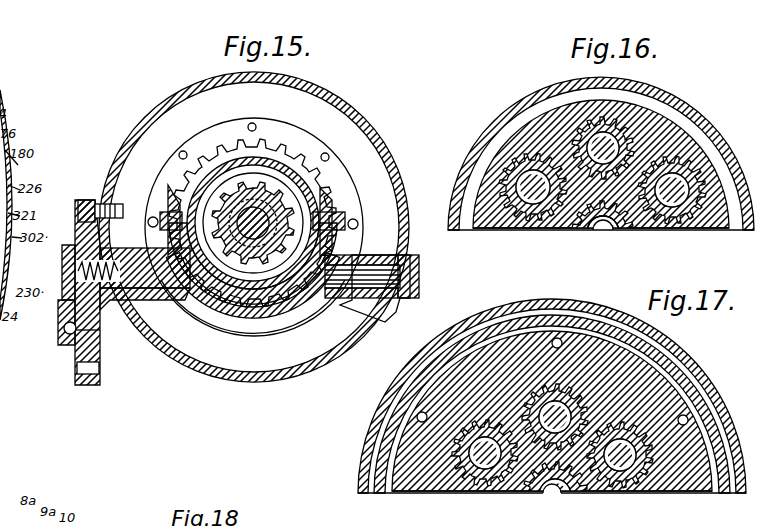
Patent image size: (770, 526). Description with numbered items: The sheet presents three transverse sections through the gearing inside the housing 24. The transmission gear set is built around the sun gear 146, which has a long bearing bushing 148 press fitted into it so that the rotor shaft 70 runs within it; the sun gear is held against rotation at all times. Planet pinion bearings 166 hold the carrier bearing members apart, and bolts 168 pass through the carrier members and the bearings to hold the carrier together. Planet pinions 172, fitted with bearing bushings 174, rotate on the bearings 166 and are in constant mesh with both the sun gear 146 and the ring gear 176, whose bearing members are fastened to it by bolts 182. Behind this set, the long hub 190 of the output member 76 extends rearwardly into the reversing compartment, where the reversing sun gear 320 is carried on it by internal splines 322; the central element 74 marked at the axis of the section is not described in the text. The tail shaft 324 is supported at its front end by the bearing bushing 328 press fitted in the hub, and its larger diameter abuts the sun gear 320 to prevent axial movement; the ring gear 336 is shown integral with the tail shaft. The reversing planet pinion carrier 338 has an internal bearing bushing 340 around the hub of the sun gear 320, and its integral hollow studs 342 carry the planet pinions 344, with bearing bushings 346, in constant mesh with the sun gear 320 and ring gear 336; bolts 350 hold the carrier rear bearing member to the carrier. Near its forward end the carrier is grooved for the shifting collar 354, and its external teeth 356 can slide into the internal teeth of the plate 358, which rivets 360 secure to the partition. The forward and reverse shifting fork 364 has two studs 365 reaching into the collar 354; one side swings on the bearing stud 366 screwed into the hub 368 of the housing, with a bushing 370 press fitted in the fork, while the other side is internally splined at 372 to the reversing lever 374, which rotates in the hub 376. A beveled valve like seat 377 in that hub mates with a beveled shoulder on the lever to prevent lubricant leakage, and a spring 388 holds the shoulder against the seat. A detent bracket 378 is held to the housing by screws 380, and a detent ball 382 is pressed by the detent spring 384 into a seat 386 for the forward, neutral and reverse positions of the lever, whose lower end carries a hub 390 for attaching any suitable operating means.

In FIG. 15, the housing 24 is at (380, 145).
In FIG. 16, the housing 24 is at (722, 150).
In FIG. 17, the housing 24 is at (362, 490).
In FIG. 15, the rotor shaft 70 is at (215, 178).
In FIG. 17, the rotor shaft 70 is at (552, 426).
In FIG. 15, the shaft 74 is at (385, 263).
In FIG. 17, the output member 76 is at (724, 488).
In FIG. 17, the sun gear 146 is at (556, 496).
In FIG. 17, the bearing bushing 148 is at (525, 480).
In FIG. 17, the planet pinion bearings 166 is at (578, 417).
In FIG. 17, the bolts 168 is at (532, 417).
In FIG. 17, the planet pinions 172 is at (596, 470).
In FIG. 17, the bearing bushings 174 is at (635, 475).
In FIG. 17, the ring gear 176 is at (440, 480).
In FIG. 17, the bolts 182 is at (418, 430).
In FIG. 15, the long hub 190 is at (235, 185).
In FIG. 16, the long hub 190 is at (575, 232).
In FIG. 15, the reversing sun gear 320 is at (272, 175).
In FIG. 16, the reversing sun gear 320 is at (556, 232).
In FIG. 15, the internal splines 322 is at (255, 180).
In FIG. 16, the internal splines 322 is at (640, 225).
In FIG. 16, the tail shaft 324 is at (614, 232).
In FIG. 16, the bearing bushing 328 is at (590, 232).
In FIG. 16, the ring gear 336 is at (690, 140).
In FIG. 15, the reversing planet pinion carrier 338 is at (312, 158).
In FIG. 15, the bearing bushing 340 is at (305, 185).
In FIG. 16, the hollow studs 342 is at (680, 215).
In FIG. 16, the planet pinions 344 is at (580, 148).
In FIG. 16, the bearing bushings 346 is at (630, 148).
In FIG. 16, the bolts 350 is at (515, 210).
In FIG. 15, the shifting collar 354 is at (182, 200).
In FIG. 15, the external teeth 356 is at (237, 128).
In FIG. 15, the plate 358 is at (275, 130).
In FIG. 15, the rivets 360 is at (330, 156).
In FIG. 15, the forward and reverse shifting fork 364 is at (302, 312).
In FIG. 15, the studs 365 is at (328, 212).
In FIG. 15, the bearing stud 366 is at (365, 275).
In FIG. 15, the hub 368 is at (358, 298).
In FIG. 15, the bushing 370 is at (345, 306).
In FIG. 15, the internal splines 372 is at (205, 300).
In FIG. 15, the reversing lever 374 is at (135, 260).
In FIG. 15, the hub 376 is at (110, 245).
In FIG. 15, the beveled valve like seat 377 is at (135, 296).
In FIG. 15, the detent bracket 378 is at (70, 290).
In FIG. 15, the screws 380 is at (84, 205).
In FIG. 15, the detent ball 382 is at (82, 322).
In FIG. 15, the detent spring 384 is at (68, 336).
In FIG. 15, the seat 386 is at (95, 338).
In FIG. 15, the spring 388 is at (76, 262).
In FIG. 15, the hub 390 is at (99, 360).